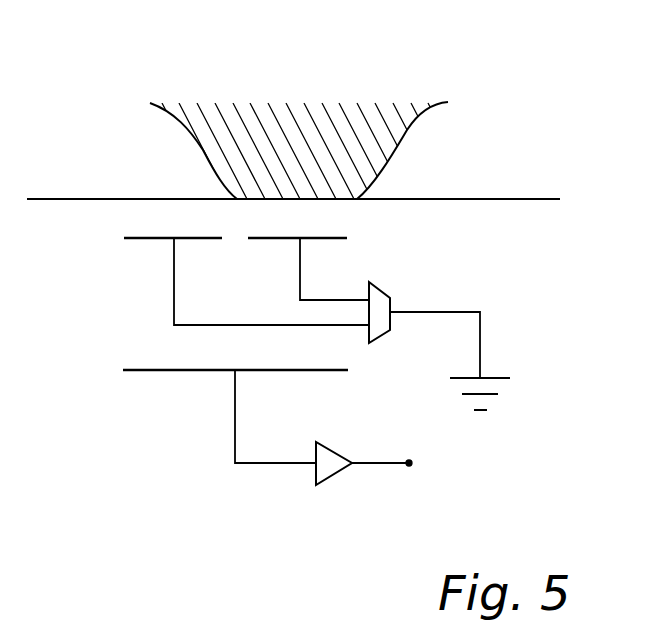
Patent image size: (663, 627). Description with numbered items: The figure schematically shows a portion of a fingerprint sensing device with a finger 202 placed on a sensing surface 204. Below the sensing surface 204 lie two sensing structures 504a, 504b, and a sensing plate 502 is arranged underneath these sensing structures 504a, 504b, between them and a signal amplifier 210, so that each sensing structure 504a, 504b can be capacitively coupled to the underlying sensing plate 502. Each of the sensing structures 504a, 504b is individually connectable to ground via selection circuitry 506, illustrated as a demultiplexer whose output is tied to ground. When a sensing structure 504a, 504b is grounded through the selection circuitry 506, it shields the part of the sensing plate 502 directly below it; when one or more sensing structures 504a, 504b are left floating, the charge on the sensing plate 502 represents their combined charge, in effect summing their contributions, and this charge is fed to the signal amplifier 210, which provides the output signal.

The finger 202 is at (362, 113).
The sensing surface 204 is at (535, 198).
The sensing structure 504a is at (138, 237).
The sensing structure 504b is at (338, 238).
The selection circuitry 506 is at (382, 292).
The sensing plate 502 is at (155, 373).
The signal amplifier 210 is at (330, 477).